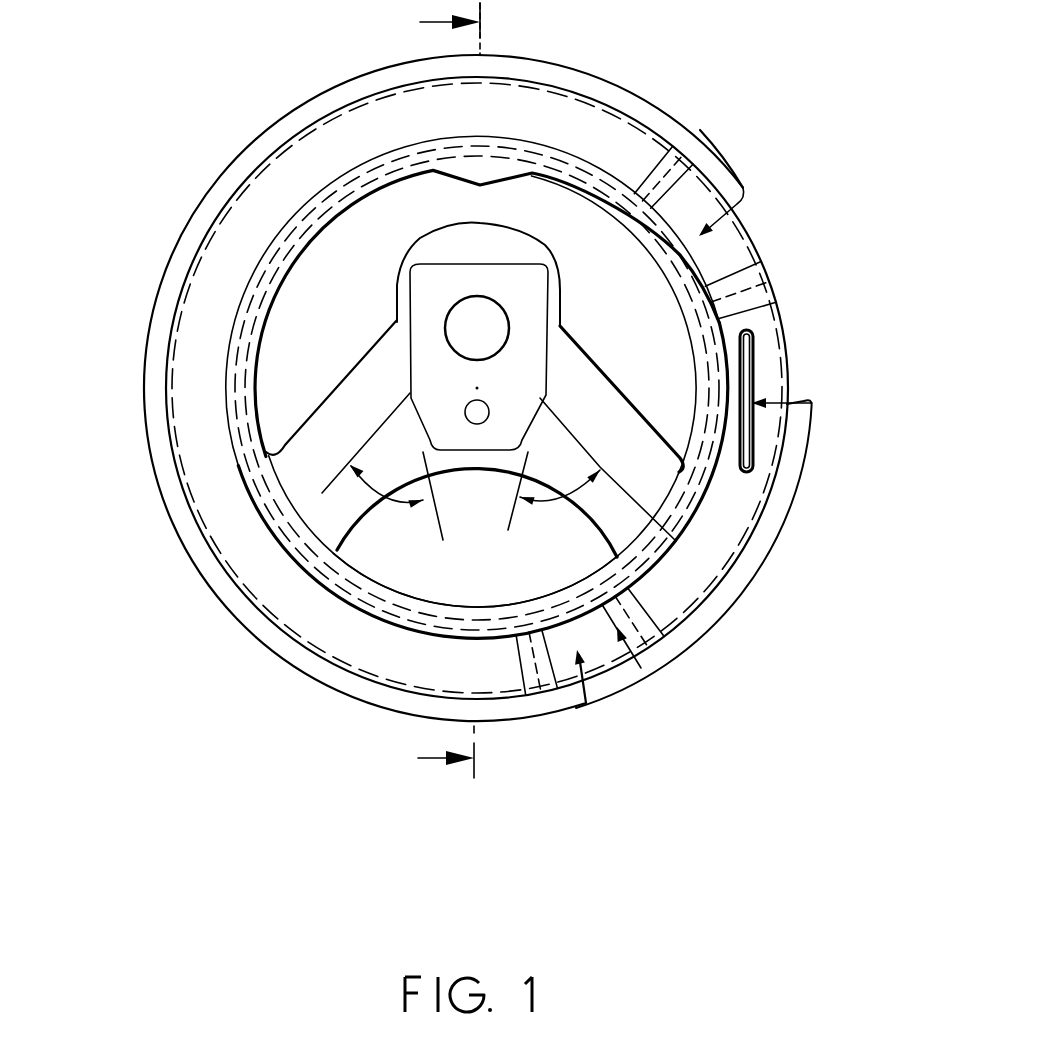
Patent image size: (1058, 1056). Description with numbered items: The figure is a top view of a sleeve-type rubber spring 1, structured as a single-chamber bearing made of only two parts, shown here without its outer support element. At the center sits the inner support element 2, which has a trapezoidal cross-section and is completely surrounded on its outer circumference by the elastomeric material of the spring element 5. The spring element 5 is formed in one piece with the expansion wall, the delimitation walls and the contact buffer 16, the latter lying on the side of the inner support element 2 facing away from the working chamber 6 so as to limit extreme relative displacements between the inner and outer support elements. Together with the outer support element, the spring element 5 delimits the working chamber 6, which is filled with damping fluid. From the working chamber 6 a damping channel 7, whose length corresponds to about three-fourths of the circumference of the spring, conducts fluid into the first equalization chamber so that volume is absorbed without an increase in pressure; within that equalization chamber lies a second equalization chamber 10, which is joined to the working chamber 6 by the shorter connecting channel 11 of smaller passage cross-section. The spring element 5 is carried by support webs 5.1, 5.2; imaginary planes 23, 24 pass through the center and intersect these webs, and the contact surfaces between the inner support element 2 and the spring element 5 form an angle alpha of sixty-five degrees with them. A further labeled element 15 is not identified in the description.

The sleeve-type rubber spring 1 is at (845, 108).
The inner support element 2 is at (430, 283).
The spring element 5 is at (349, 396).
The support web 5.1 is at (327, 458).
The support web 5.2 is at (623, 453).
The working chamber 6 is at (410, 557).
The damping channel 7 is at (160, 319).
The second equalization chamber 10 is at (755, 351).
The connecting channel 11 is at (720, 626).
The outer ring end tab 15 is at (530, 263).
The contact buffer 16 is at (452, 250).
The imaginary plane 23 is at (335, 480).
The imaginary plane 24 is at (595, 503).